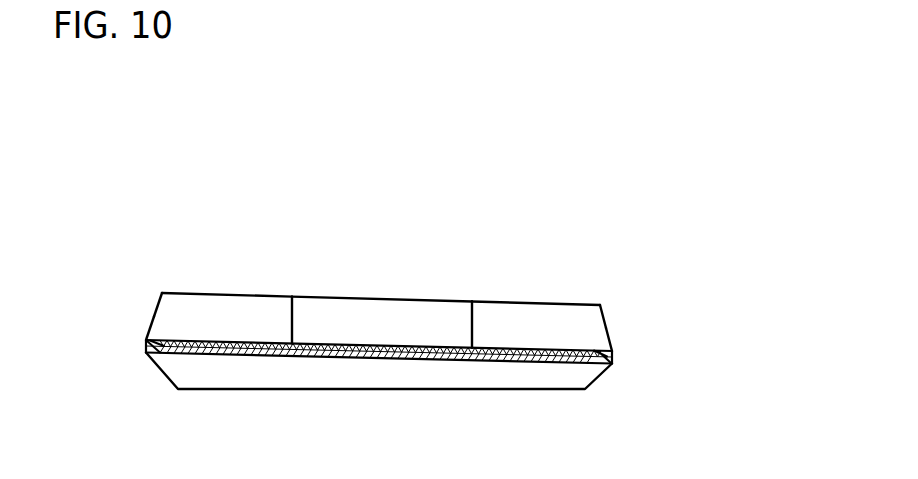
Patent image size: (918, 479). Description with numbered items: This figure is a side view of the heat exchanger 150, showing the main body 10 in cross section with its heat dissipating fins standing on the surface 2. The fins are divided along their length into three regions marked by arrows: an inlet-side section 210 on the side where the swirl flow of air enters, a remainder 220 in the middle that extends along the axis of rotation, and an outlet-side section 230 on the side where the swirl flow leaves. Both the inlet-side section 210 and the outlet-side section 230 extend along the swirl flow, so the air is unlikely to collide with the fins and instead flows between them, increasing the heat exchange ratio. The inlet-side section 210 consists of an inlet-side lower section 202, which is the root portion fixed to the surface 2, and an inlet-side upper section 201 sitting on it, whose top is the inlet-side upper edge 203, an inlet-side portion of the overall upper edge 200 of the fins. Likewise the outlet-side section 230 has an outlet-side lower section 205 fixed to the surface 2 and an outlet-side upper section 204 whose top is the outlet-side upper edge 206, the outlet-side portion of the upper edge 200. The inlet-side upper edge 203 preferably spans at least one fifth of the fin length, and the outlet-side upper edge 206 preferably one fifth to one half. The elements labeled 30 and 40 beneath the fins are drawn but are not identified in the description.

The heat exchanger 150 is at (395, 150).
The upper edge 200 is at (399, 299).
The surface 2 is at (434, 346).
The main body 10 is at (613, 356).
The base 30 is at (585, 382).
The bonding member 40 is at (420, 360).
The inlet-side section 210 is at (233, 264).
The remainder 220 is at (341, 264).
The outlet-side section 230 is at (550, 264).
The inlet-side upper section 201 is at (170, 302).
The inlet-side lower section 202 is at (168, 330).
The inlet-side upper edge 203 is at (210, 293).
The outlet-side upper section 204 is at (590, 319).
The outlet-side lower section 205 is at (590, 340).
The outlet-side upper edge 206 is at (555, 304).